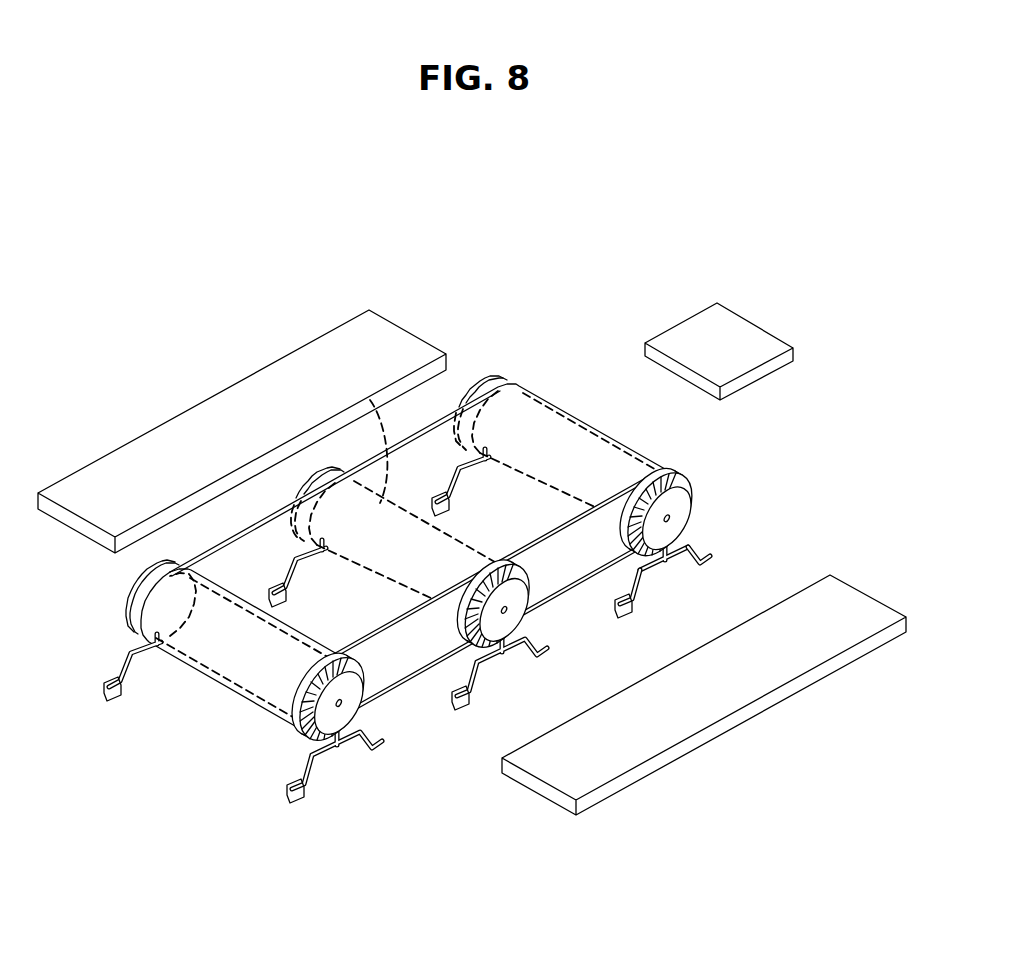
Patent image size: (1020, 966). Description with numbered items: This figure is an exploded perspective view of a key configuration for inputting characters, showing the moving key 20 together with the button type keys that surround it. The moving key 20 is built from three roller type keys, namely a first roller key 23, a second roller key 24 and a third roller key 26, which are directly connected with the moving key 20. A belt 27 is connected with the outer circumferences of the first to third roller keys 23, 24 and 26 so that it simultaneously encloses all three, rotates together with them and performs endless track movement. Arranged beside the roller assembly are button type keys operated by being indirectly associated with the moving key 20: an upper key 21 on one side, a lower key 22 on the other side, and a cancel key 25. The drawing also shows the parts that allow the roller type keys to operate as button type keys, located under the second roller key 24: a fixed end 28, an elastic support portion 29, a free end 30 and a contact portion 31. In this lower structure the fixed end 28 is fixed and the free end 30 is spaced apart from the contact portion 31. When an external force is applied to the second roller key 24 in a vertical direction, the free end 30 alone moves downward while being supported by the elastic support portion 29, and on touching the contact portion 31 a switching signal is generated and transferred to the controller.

The moving key 20 is at (418, 545).
The upper key 21 is at (185, 432).
The lower key 22 is at (718, 703).
The first roller key 23 is at (230, 663).
The second roller key 24 is at (588, 423).
The cancel key 25 is at (745, 332).
The third roller key 26 is at (370, 400).
The belt 27 is at (547, 403).
The fixed end 28 is at (728, 535).
The elastic support portion 29 is at (682, 583).
The free end 30 is at (654, 611).
The contact portion 31 is at (608, 638).